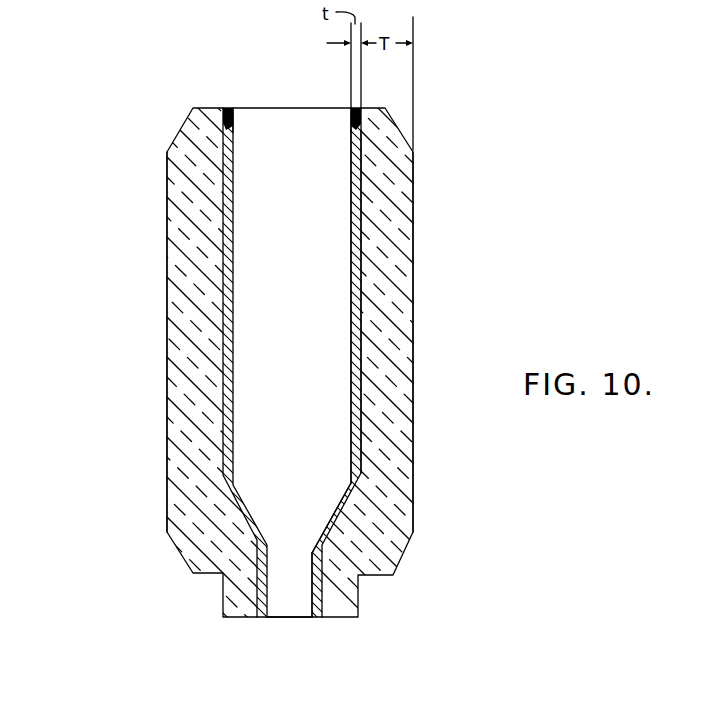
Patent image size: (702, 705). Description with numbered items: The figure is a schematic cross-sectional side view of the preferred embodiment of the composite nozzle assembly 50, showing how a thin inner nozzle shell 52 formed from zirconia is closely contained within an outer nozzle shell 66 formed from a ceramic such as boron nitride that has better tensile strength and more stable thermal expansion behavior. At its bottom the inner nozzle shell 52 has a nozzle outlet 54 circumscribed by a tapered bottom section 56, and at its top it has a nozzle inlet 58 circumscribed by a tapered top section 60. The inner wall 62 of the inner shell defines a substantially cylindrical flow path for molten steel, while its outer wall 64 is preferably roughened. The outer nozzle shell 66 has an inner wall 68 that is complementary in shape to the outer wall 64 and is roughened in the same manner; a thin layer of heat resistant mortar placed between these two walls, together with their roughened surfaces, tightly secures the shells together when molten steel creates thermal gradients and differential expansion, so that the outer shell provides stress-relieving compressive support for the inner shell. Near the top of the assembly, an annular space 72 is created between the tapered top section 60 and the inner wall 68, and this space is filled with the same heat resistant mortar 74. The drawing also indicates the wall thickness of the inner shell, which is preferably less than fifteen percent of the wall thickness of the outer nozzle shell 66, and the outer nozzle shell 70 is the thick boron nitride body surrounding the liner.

The composite nozzle assembly 50 is at (158, 178).
The inner nozzle shell 52 is at (240, 388).
The nozzle outlet 54 is at (304, 617).
The tapered bottom section 56 is at (353, 498).
The nozzle inlet 58 is at (236, 126).
The tapered top section 60 is at (351, 133).
The inner wall 62 is at (351, 282).
The outer wall 64 is at (361, 228).
The outer nozzle shell 66 is at (160, 336).
The inner wall 68 is at (346, 397).
The nozzle body 70 is at (413, 287).
The annular space 72 is at (225, 108).
The heat resistant mortar 74 is at (361, 109).